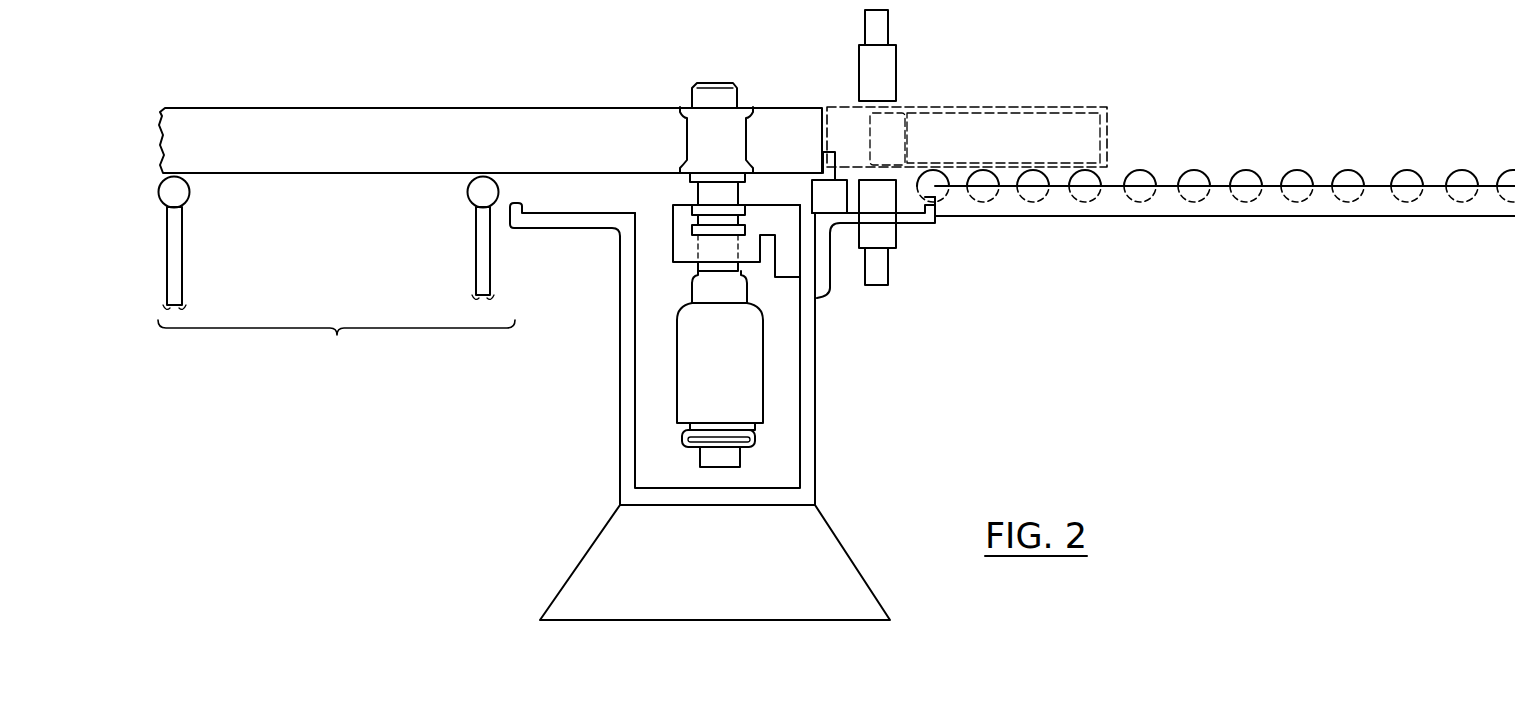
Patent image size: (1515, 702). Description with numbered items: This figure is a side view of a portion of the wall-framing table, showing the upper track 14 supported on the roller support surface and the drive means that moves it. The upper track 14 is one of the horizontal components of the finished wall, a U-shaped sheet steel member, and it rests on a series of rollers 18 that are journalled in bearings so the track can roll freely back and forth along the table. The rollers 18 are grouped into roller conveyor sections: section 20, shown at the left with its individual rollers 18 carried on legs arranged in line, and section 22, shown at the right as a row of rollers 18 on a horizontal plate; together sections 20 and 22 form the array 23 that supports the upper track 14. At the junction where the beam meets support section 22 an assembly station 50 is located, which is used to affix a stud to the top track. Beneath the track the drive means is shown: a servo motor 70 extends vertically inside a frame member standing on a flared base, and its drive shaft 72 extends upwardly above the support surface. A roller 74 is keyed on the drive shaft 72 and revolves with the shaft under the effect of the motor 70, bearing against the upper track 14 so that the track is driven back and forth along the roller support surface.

The upper track 14 is at (328, 117).
The rollers 18 is at (181, 193).
The roller conveyor section 20 is at (336, 343).
The roller conveyor section 22 is at (1278, 218).
The array 23 is at (1222, 183).
The assembly station 50 is at (887, 52).
The servo motor 70 is at (690, 365).
The drive shaft 72 is at (722, 82).
The roller 74 is at (702, 120).